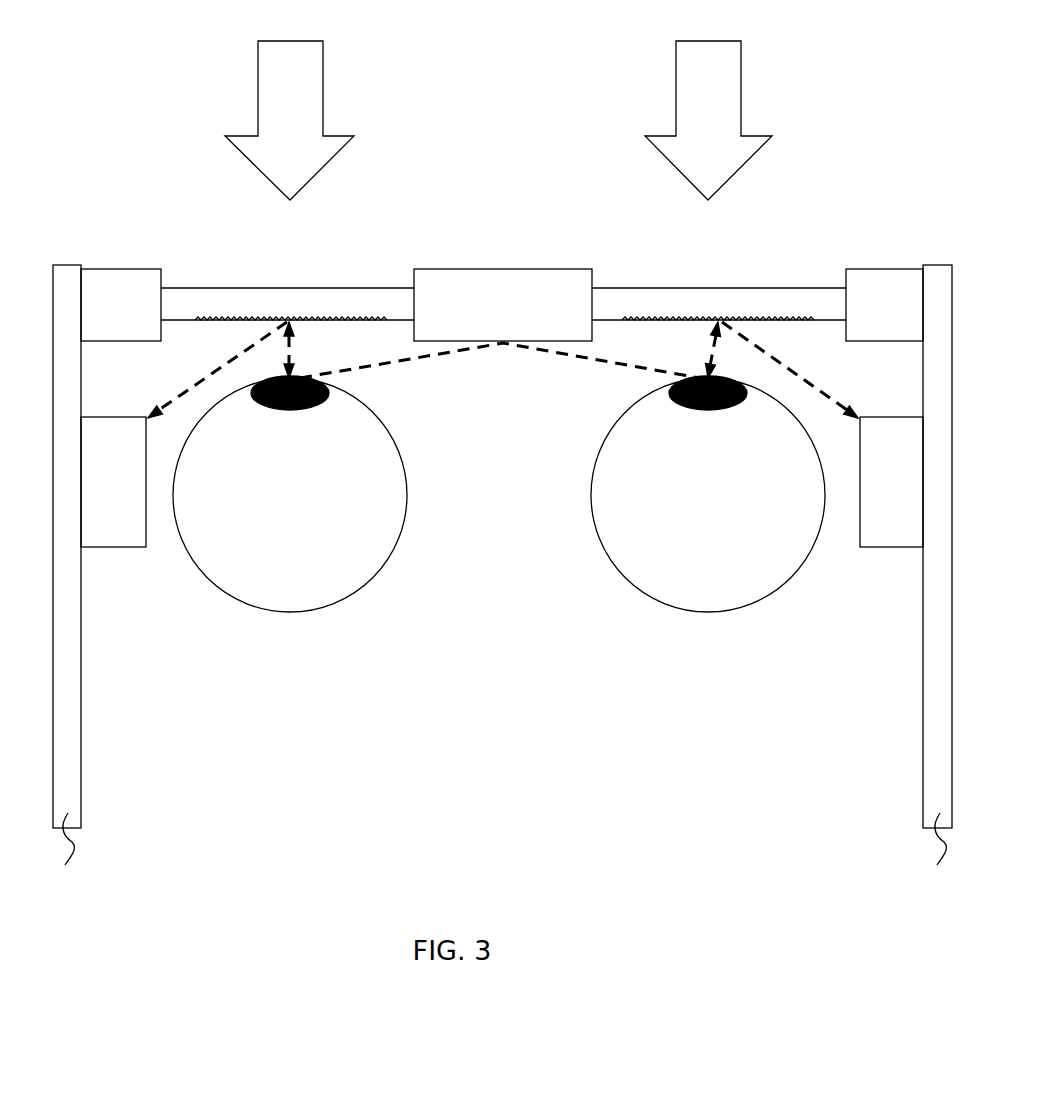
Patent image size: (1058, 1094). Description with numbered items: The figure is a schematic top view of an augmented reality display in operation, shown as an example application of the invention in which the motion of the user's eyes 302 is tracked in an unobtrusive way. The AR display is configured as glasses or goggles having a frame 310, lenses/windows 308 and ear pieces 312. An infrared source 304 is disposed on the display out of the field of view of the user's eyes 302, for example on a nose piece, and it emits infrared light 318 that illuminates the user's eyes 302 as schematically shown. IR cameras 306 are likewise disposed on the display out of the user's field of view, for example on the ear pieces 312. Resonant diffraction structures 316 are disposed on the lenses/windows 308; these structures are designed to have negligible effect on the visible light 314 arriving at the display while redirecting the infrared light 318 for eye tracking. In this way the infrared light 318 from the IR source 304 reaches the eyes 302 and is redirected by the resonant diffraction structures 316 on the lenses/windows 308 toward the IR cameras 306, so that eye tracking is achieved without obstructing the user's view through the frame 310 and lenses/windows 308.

The user's eyes 302 is at (265, 506).
The infrared source 304 is at (478, 316).
The IR cameras 306 is at (89, 494).
The lenses/windows 308 is at (331, 302).
The frame 310 is at (96, 319).
The ear pieces 312 is at (502, 586).
The visible light 314 is at (640, 67).
The resonant diffraction structures 316 is at (207, 320).
The infrared light 318 is at (587, 350).